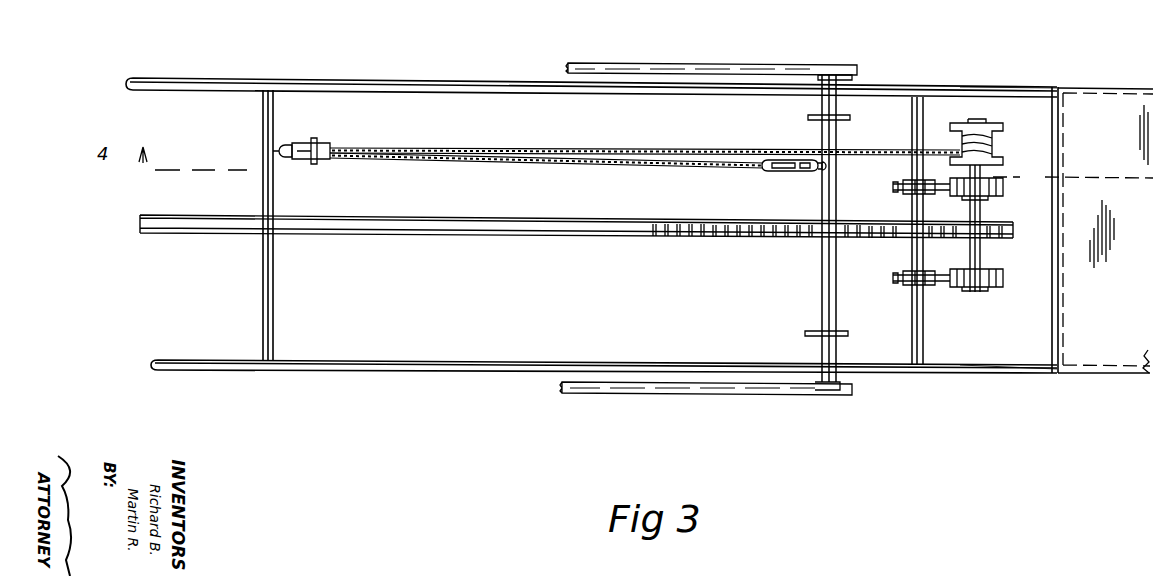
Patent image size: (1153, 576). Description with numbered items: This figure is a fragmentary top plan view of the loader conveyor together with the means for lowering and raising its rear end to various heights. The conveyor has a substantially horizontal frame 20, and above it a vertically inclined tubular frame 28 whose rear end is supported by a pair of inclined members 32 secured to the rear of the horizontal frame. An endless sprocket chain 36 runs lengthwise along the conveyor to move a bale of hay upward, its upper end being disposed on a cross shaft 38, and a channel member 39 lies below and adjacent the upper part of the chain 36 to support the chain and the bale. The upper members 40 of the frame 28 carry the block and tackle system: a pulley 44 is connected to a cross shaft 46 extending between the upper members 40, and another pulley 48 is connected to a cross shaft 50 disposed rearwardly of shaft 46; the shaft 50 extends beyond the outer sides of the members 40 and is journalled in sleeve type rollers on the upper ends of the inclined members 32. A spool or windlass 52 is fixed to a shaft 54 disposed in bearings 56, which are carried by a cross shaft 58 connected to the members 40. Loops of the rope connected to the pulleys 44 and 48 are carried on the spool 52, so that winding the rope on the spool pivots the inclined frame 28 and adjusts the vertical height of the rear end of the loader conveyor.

The frame 20 is at (490, 372).
The vertically inclined tubular frame 28 is at (300, 78).
The inclined members 32 is at (701, 63).
The endless sprocket chain 36 is at (704, 240).
The cross shaft 38 is at (1052, 337).
The channel member 39 is at (742, 397).
The upper members 40 is at (990, 87).
The pulley 44 is at (306, 142).
The cross shaft 46 is at (263, 124).
The pulley 48 is at (796, 172).
The cross shaft 50 is at (838, 200).
The spool or windlass 52 is at (990, 125).
The shaft 54 is at (983, 217).
The bearings 56 is at (1003, 192).
The cross shaft 58 is at (924, 323).